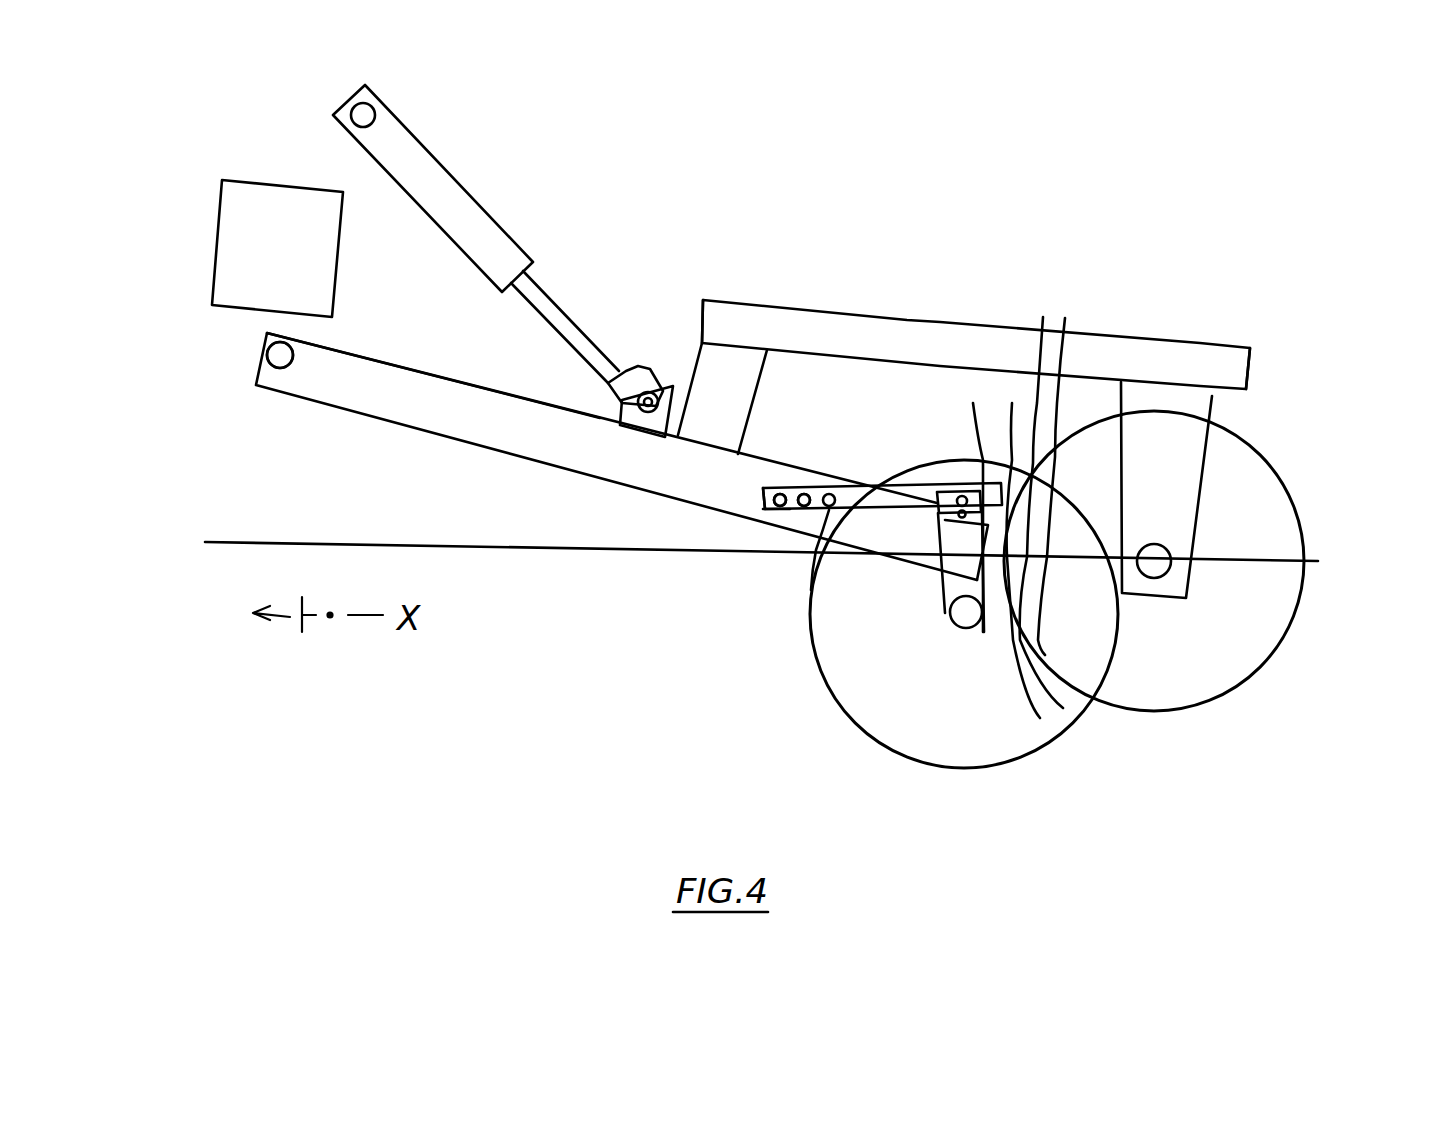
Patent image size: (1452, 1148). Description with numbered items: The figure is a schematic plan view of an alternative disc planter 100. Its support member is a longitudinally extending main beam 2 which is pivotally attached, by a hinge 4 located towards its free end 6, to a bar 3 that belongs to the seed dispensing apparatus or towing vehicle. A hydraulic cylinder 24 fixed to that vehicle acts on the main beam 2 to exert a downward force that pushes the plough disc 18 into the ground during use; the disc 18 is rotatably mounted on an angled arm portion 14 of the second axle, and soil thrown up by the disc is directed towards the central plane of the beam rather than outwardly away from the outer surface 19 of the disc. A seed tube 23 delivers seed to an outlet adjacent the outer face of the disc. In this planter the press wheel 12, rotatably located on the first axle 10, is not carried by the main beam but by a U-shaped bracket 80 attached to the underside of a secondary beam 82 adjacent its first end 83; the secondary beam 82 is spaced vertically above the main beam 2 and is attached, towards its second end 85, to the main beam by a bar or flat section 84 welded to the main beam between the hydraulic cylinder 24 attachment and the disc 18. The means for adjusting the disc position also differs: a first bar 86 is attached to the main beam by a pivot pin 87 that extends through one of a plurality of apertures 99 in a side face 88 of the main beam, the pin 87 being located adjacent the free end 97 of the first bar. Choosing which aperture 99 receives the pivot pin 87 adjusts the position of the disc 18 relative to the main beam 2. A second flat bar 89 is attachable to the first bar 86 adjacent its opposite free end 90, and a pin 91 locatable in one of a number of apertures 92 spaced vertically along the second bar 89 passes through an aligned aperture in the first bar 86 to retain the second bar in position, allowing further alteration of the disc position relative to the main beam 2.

The main beam 2 is at (417, 403).
The bar 3 is at (265, 180).
The hinge 4 is at (263, 360).
The free end 6 is at (252, 378).
The first axle 10 is at (1154, 561).
The press wheel 12 is at (1138, 712).
The arm portions 14 is at (966, 613).
The plough disc 18 is at (928, 768).
The outer surfaces 19 is at (958, 733).
The seed tubes 23 is at (1073, 325).
The hydraulic cylinder 24 is at (457, 175).
The U-shaped bracket 80 is at (1198, 405).
The secondary beam 82 is at (1198, 360).
The first end 83 is at (1262, 368).
The bar or flat section 84 is at (732, 400).
The second end 85 is at (700, 318).
The first bar 86 is at (785, 483).
The pivot pin 87 is at (767, 515).
The side face / free end 88 is at (572, 452).
The second flat bar 89 is at (940, 585).
The free end 90 is at (1012, 403).
The pin 91 is at (960, 496).
The apertures 92 is at (973, 403).
The free end 97 is at (760, 500).
The apertures 99 is at (780, 506).
The disc planter 100 is at (716, 275).